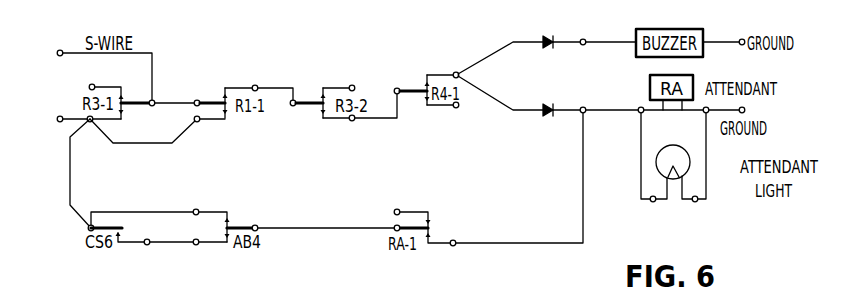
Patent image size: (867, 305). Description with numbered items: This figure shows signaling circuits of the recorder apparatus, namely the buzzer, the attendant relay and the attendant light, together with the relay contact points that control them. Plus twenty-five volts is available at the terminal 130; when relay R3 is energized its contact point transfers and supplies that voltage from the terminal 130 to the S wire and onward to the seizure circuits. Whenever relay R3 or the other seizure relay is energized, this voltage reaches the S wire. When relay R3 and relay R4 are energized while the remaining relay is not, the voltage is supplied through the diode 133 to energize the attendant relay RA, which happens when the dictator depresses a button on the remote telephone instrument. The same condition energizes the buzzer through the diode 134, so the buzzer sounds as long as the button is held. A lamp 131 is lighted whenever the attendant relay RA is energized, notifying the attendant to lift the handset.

The terminal 130 is at (61, 123).
The lamp 131 is at (658, 169).
The diode 133 is at (549, 104).
The diode 134 is at (549, 49).